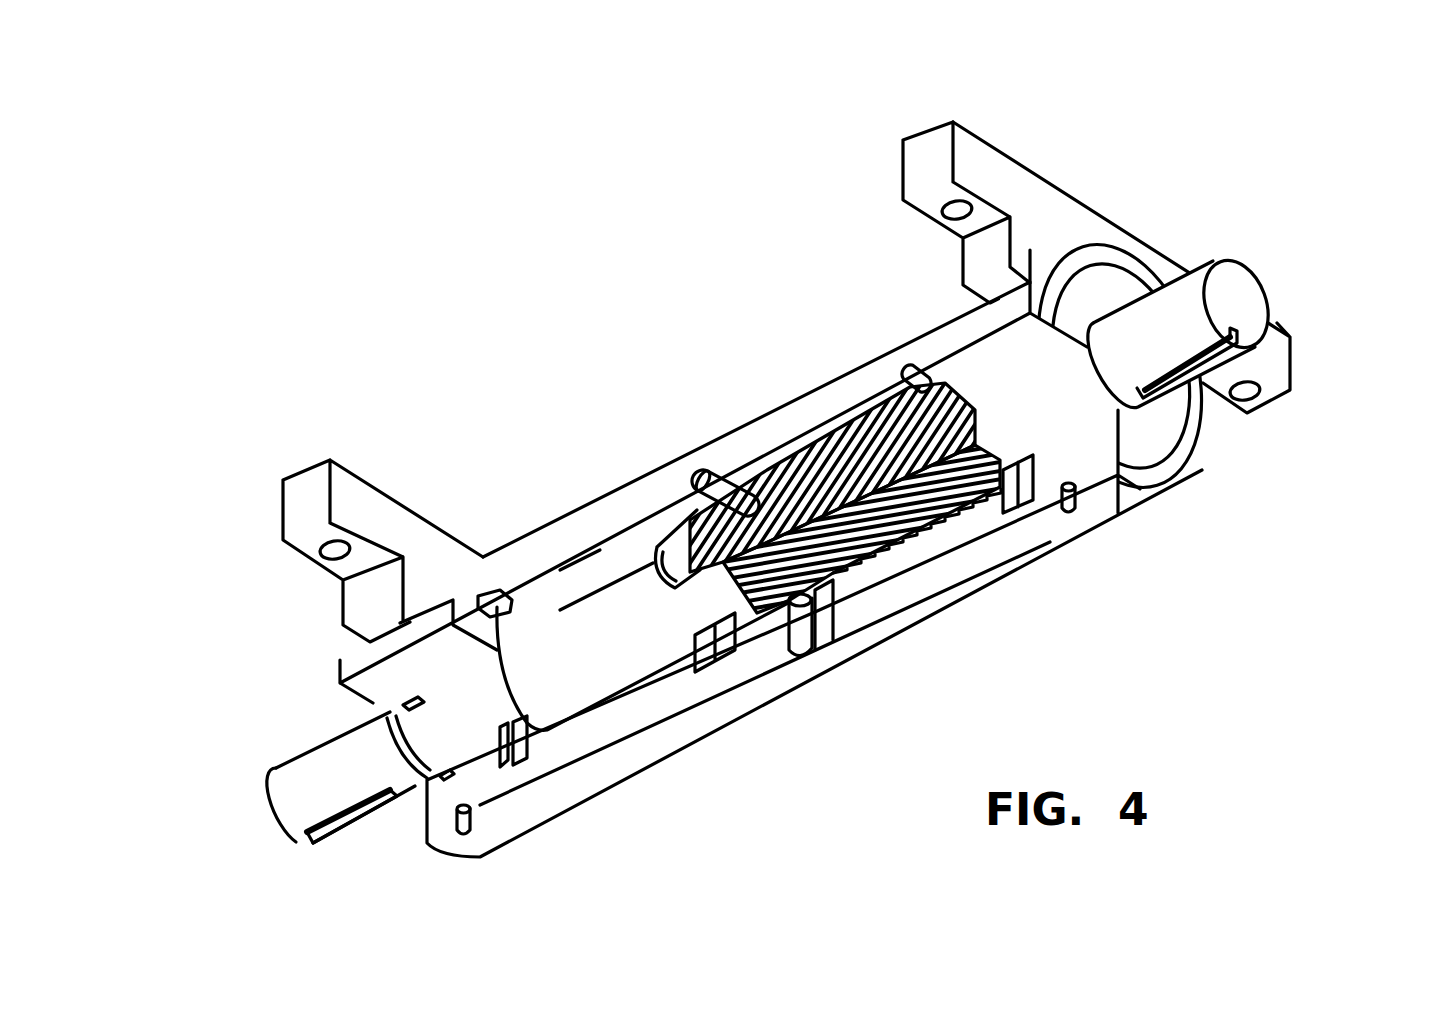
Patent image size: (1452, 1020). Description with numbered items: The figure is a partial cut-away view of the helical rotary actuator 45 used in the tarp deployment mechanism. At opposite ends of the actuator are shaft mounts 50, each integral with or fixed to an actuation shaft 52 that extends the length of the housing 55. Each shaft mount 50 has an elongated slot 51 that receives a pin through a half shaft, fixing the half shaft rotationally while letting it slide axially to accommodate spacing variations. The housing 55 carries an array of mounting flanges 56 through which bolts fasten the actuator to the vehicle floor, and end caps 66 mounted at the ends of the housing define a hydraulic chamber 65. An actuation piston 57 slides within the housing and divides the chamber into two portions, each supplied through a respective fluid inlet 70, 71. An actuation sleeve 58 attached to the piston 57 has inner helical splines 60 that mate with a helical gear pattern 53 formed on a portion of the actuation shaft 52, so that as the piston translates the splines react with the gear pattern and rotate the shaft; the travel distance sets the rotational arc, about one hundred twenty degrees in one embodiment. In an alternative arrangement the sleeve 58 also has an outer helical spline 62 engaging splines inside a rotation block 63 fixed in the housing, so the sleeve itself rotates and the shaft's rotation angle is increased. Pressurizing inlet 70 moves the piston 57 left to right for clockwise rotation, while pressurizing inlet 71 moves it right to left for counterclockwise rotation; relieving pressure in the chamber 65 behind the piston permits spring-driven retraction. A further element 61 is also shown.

The helical rotary actuator 45 is at (747, 712).
The shaft mount 50 is at (1212, 252).
The elongated slot 51 is at (1207, 358).
The actuation shaft 52 is at (620, 655).
The helical gear pattern 53 is at (913, 510).
The housing 55 is at (1122, 518).
The mounting flange 56 is at (987, 137).
The actuation piston 57 is at (638, 548).
The actuation sleeve 58 is at (790, 462).
The inner helical spline 60 is at (940, 525).
The pin 61 is at (510, 705).
The outer helical spline 62 is at (877, 572).
The rotation block 63 is at (823, 600).
The hydraulic chamber 65 is at (590, 572).
The end cap 66 is at (432, 812).
The fluid inlet 70 is at (500, 588).
The fluid inlet 71 is at (915, 372).